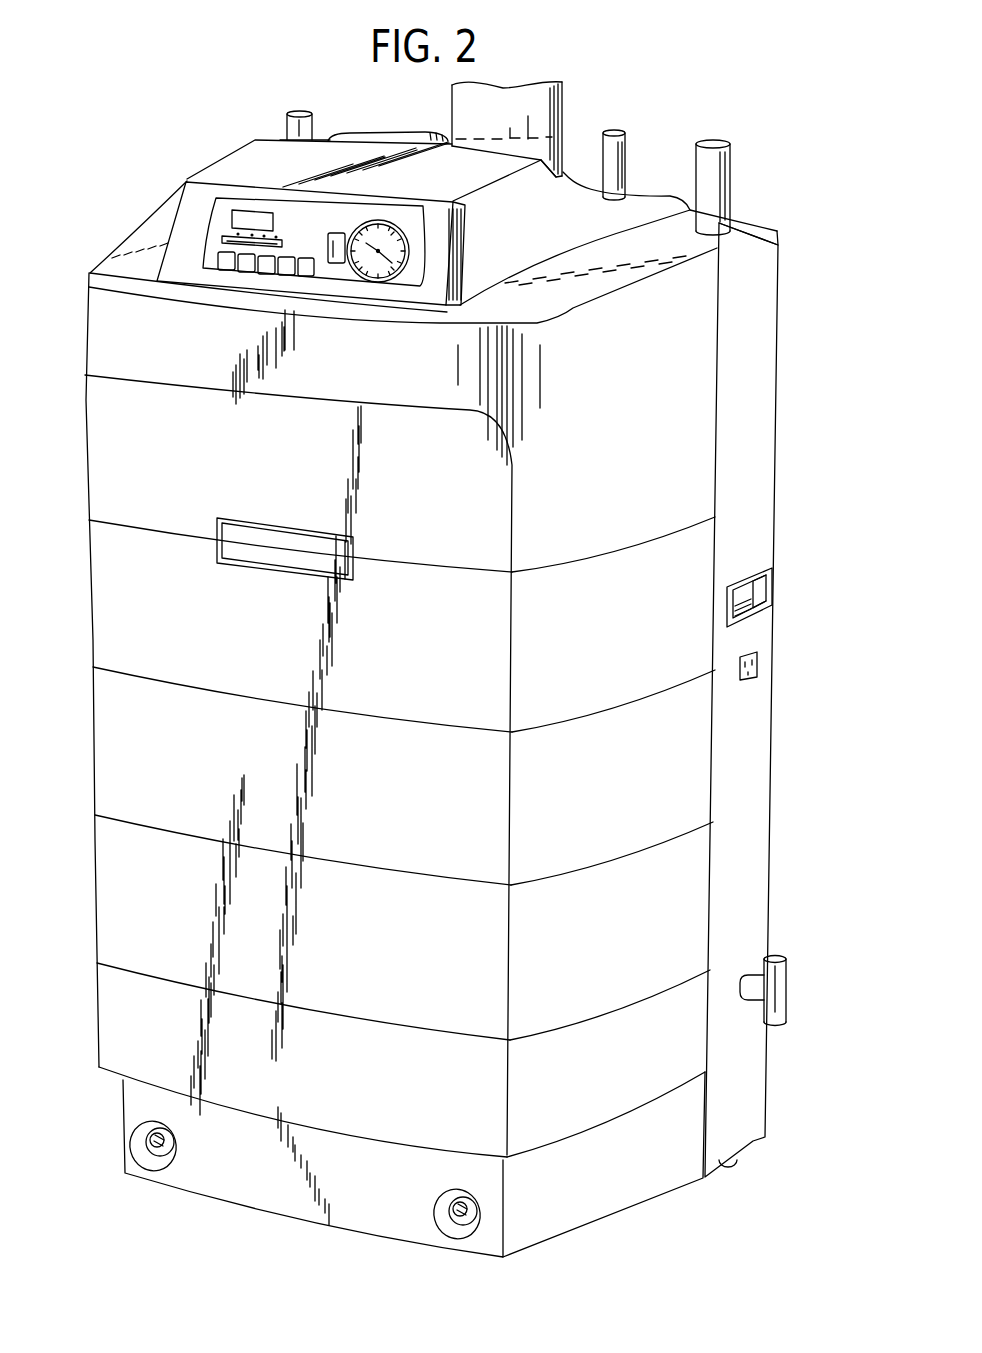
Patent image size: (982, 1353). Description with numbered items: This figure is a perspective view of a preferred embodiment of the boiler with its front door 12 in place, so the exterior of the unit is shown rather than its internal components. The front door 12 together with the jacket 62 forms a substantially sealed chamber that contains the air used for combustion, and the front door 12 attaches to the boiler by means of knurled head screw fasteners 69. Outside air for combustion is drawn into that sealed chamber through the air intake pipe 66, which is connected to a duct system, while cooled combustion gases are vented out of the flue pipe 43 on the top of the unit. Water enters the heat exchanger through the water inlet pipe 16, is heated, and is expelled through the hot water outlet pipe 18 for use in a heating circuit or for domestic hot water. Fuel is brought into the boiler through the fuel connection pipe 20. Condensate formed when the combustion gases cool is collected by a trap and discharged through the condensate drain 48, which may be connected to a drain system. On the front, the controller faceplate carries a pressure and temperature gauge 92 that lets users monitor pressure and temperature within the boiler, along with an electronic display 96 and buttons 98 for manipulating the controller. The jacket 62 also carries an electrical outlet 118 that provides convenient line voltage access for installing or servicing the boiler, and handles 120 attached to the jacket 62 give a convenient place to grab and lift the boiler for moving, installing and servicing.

The front door 12 is at (679, 803).
The water inlet pipe 16 is at (307, 110).
The hot water outlet pipe 18 is at (731, 163).
The fuel connection pipe 20 is at (626, 145).
The flue pipe 43 is at (567, 162).
The condensate drain 48 is at (787, 985).
The jacket 62 is at (770, 408).
The air intake pipe 66 is at (406, 132).
The knurled head screw fasteners 69 is at (146, 1162).
The pressure and temperature gauge 92 is at (372, 284).
The electronic display 96 is at (250, 211).
The buttons 98 is at (336, 233).
The electrical outlet 118 is at (757, 664).
The handles 120 is at (773, 587).